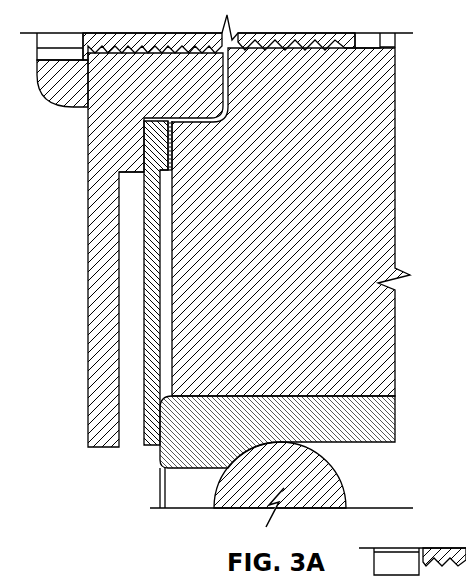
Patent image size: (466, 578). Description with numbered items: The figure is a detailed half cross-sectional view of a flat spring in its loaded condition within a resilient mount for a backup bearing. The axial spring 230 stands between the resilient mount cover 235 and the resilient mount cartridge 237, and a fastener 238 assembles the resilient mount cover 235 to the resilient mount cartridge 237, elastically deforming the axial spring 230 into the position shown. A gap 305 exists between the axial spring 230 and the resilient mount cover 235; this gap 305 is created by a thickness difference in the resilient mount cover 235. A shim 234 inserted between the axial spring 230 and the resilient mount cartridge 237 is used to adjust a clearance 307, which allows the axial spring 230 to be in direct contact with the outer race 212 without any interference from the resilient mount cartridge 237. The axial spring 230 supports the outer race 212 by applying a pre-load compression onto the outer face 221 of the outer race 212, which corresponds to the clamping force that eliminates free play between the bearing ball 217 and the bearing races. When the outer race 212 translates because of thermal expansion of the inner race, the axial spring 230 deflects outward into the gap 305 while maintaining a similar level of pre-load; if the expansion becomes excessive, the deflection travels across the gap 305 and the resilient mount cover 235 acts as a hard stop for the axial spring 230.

The outer race 212 is at (384, 420).
The bearing ball 217 is at (260, 513).
The outer face of outer race 221 is at (157, 455).
The axial spring 230 is at (148, 278).
The shim 234 is at (170, 153).
The resilient mount cover 235 is at (110, 135).
The resilient mount cartridge 237 is at (382, 150).
The fastener 238 is at (78, 107).
The gap 305 is at (133, 228).
The clearance 307 is at (165, 347).